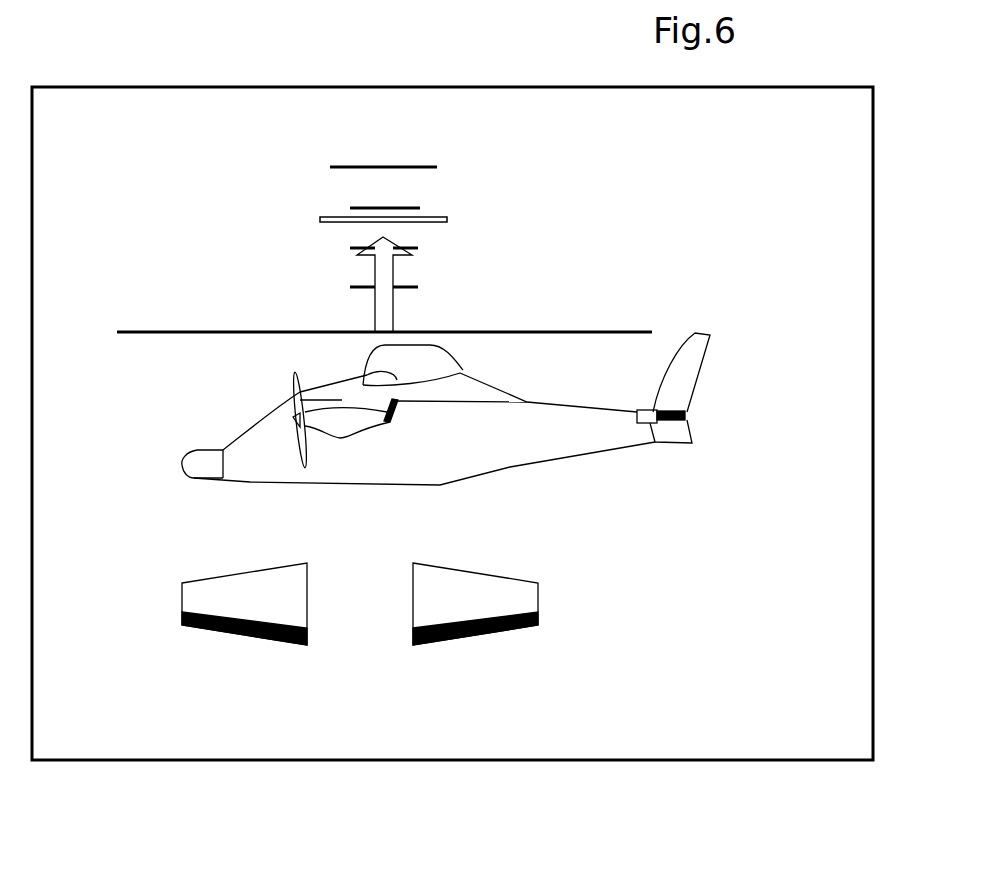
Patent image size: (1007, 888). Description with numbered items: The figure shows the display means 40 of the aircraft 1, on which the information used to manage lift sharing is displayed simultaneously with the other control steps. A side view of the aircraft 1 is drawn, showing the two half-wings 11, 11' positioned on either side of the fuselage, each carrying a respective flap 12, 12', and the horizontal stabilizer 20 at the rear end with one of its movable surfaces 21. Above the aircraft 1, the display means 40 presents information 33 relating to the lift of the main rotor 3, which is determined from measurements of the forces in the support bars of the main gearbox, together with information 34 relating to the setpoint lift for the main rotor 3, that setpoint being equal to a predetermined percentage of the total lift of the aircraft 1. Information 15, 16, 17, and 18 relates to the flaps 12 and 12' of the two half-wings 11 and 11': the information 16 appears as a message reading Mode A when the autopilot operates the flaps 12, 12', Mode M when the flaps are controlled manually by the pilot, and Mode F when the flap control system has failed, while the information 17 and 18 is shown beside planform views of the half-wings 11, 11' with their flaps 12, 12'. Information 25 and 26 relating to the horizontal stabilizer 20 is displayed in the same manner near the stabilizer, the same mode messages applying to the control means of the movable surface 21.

The aircraft 1 is at (161, 478).
The main rotor 3 is at (253, 305).
The half-wing 11 is at (235, 499).
The half-wing 11' is at (513, 604).
The flap 12 is at (327, 503).
The flap 12' is at (487, 637).
The information relating to the flaps 15 is at (446, 420).
The operating mode information 16 is at (444, 460).
The information relating to the flaps 17 is at (238, 670).
The information relating to the flaps 18 is at (447, 672).
The horizontal stabilizer 20 is at (647, 410).
The movable surface 21 is at (679, 411).
The information relating to the horizontal stabilizer 25 is at (750, 420).
The information relating to the horizontal stabilizer 26 is at (730, 475).
The information relating to the lift of the main rotor 33 is at (464, 272).
The information relating to a setpoint lift for the main rotor 34 is at (254, 213).
The display means 40 is at (640, 790).